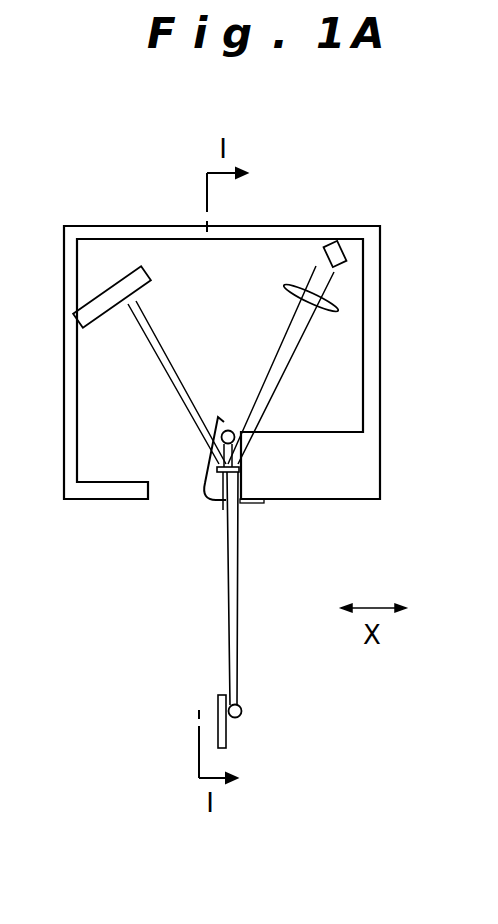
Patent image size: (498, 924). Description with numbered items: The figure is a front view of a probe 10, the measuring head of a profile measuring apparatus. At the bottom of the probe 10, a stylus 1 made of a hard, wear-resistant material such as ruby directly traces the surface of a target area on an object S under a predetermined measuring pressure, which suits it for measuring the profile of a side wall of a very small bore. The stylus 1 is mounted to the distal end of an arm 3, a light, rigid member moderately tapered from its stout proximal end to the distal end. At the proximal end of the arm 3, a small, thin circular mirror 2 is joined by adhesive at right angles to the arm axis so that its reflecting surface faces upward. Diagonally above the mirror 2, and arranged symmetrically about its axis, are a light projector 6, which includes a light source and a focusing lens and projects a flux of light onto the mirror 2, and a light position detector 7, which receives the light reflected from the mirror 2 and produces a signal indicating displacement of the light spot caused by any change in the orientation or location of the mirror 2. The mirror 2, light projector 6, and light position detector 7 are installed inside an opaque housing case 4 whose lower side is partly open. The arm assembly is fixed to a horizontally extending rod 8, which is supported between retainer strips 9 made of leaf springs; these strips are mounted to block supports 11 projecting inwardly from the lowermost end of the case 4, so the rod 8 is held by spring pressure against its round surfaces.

The stylus 1 is at (243, 707).
The mirror 2 is at (239, 469).
The arm 3 is at (238, 556).
The housing case 4 is at (257, 227).
The light projector 6 is at (342, 257).
The light position detector 7 is at (120, 295).
The rod 8 is at (229, 430).
The retainer strips 9 is at (210, 478).
The probe 10 is at (303, 222).
The block supports 11 is at (273, 442).
The object S is at (228, 734).